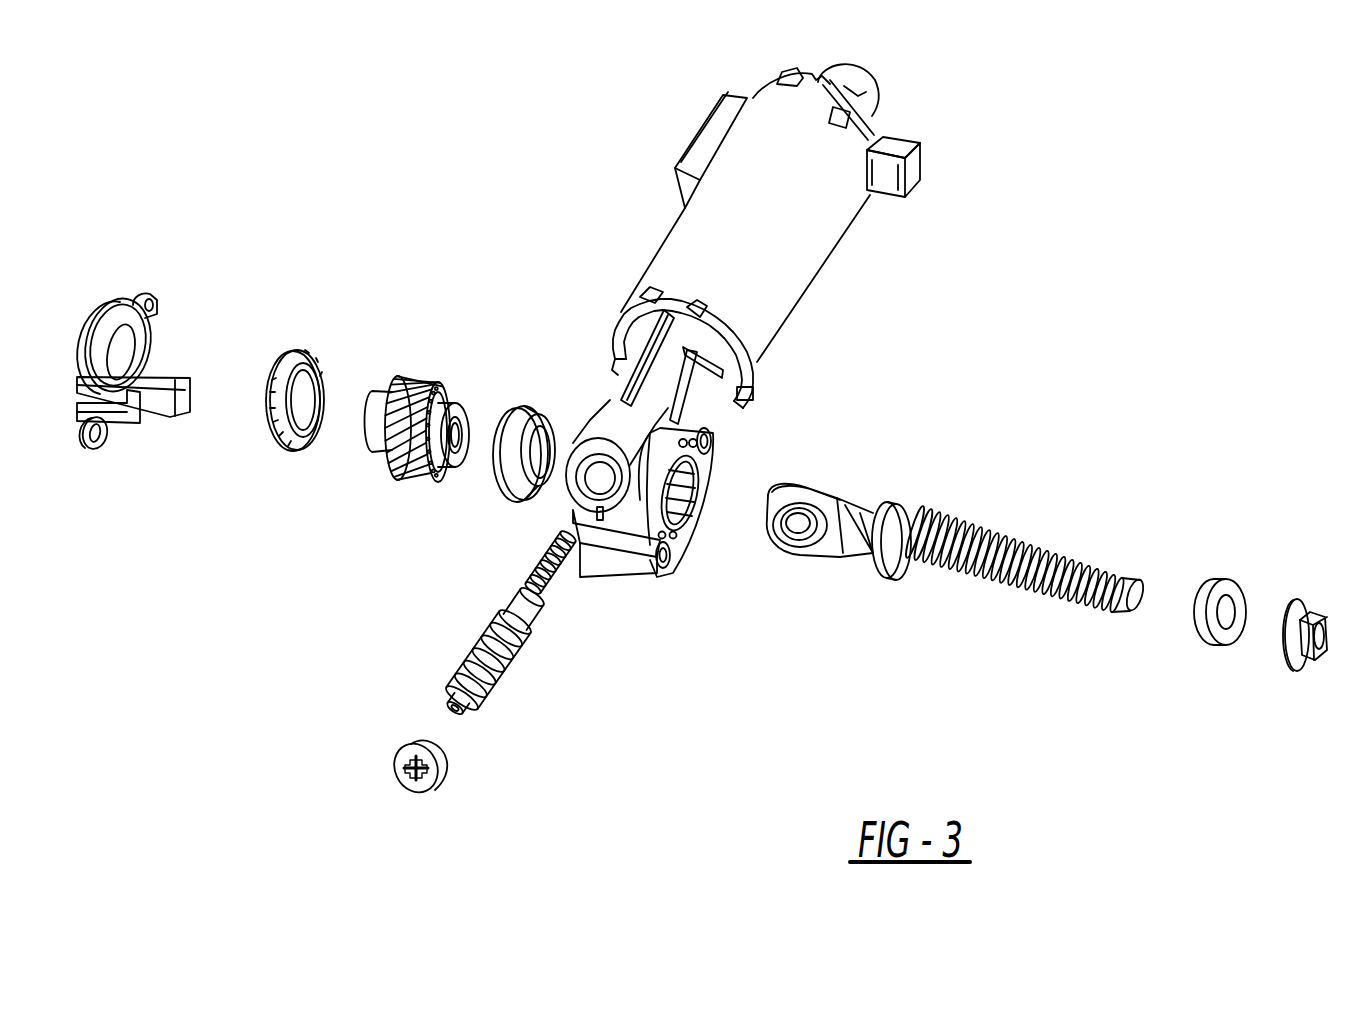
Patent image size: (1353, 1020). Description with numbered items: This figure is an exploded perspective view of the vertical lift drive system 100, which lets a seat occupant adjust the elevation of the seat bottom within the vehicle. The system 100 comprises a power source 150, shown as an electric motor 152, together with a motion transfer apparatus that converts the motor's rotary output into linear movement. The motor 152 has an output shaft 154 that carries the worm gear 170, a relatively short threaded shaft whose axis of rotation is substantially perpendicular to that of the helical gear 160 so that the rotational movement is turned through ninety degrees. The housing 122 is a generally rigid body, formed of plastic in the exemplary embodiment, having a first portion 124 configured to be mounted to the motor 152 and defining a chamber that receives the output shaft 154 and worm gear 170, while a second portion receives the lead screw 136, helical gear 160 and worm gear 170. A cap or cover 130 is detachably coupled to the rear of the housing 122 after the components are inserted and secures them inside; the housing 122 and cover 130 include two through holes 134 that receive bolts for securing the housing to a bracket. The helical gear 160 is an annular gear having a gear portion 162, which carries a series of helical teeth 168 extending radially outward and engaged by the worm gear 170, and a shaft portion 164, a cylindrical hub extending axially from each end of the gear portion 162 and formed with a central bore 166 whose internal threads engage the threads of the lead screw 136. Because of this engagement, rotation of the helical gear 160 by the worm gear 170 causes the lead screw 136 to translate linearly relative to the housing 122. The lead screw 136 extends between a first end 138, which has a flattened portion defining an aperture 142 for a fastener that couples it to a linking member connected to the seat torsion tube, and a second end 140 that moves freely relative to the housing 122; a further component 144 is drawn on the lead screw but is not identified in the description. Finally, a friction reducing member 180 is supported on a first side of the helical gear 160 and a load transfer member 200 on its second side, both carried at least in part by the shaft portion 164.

The vertical lift drive system 100 is at (428, 116).
The housing 122 is at (623, 570).
The first portion 124 is at (623, 310).
The cover 130 is at (151, 236).
The through holes 134 is at (672, 562).
The lead screw 136 is at (1037, 528).
The first end 138 is at (807, 490).
The second end 140 is at (1148, 622).
The aperture 142 is at (800, 528).
The flange 144 is at (927, 503).
The power source 150 is at (680, 99).
The electric motor 152 is at (823, 270).
The output shaft 154 is at (550, 567).
The helical gear 160 is at (425, 368).
The gear portion 162 is at (403, 477).
The shaft portion 164 is at (377, 417).
The bore 166 is at (467, 437).
The teeth 168 is at (383, 458).
The worm gear 170 is at (506, 677).
The friction reducing member 180 is at (283, 328).
The load transfer member 200 is at (547, 400).